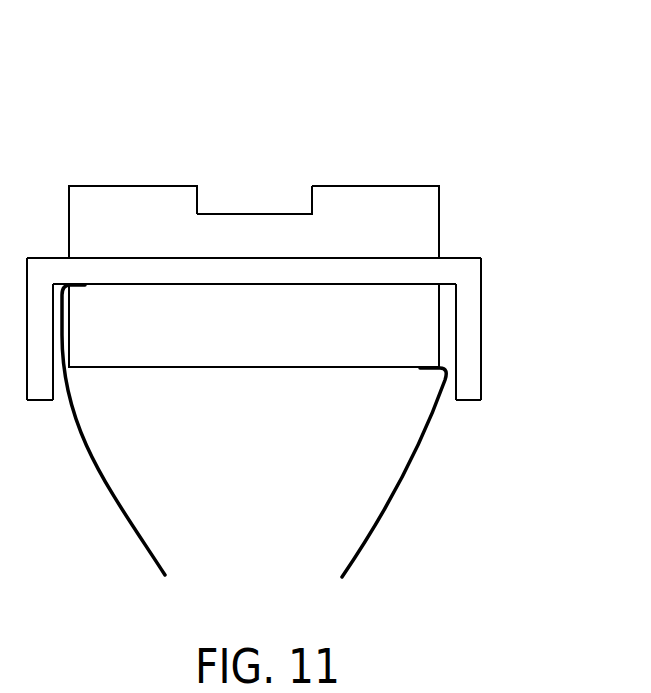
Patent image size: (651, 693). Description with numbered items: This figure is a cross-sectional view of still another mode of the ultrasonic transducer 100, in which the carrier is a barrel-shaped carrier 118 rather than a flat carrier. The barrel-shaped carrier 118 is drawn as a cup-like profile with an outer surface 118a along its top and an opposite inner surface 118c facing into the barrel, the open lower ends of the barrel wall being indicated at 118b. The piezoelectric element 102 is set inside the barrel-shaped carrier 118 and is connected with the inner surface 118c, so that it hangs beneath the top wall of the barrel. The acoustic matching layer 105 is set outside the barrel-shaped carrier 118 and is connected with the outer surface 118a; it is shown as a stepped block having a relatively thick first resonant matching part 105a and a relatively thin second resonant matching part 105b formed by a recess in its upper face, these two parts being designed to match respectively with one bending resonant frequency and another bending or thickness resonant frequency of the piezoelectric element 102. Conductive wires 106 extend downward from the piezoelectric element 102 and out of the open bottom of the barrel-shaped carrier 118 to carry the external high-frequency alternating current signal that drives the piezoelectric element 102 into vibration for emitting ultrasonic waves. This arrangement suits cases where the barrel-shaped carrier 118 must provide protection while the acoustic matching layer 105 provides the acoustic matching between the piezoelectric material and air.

The ultrasonic transducer 100 is at (375, 112).
The piezoelectric element 102 is at (273, 341).
The acoustic matching layer 105 is at (273, 249).
The first resonant matching part 105a is at (128, 202).
The second resonant matching part 105b is at (230, 218).
The conductive wires 106 is at (131, 544).
The barrel-shaped carrier 118 is at (468, 339).
The outer surface 118a is at (446, 257).
The bottom end of holder 118b is at (457, 404).
The inner surface 118c is at (450, 285).